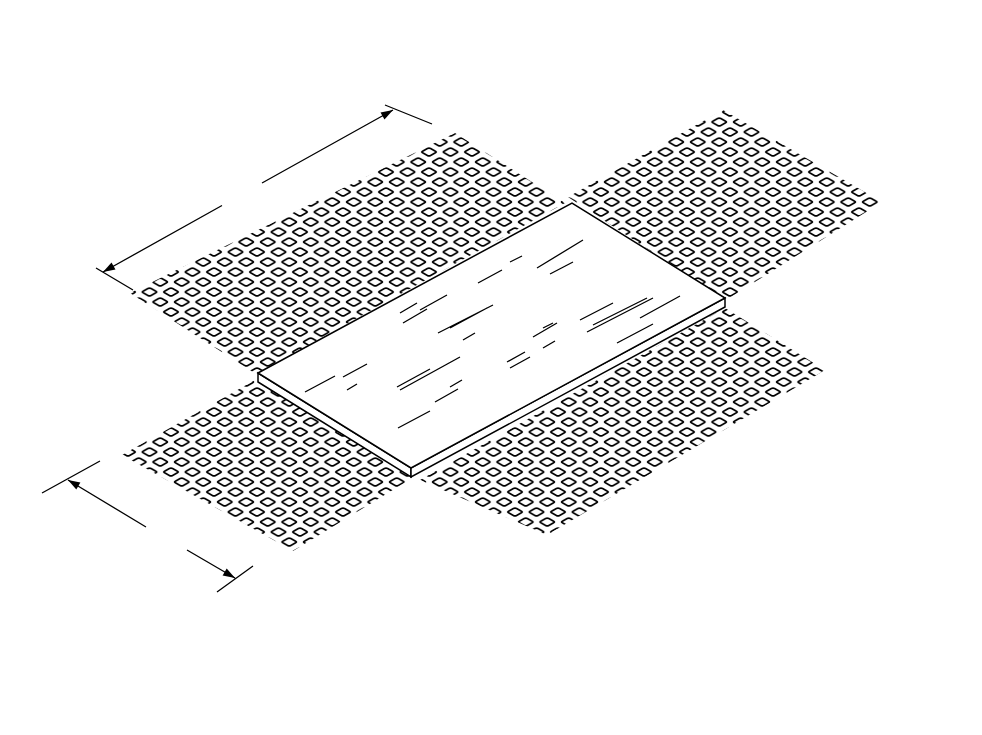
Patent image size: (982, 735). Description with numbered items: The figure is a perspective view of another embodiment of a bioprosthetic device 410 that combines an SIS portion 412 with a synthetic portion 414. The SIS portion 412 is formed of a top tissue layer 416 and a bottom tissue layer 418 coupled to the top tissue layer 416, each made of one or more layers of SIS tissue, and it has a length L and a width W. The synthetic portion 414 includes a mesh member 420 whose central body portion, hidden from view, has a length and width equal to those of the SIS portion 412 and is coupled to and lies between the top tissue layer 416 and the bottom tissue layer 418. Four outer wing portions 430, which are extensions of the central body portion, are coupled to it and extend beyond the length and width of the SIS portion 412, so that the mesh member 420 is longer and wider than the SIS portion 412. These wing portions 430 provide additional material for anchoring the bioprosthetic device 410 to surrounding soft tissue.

The bioprosthetic device 410 is at (700, 82).
The SIS portion 412 is at (547, 247).
The synthetic portion 414 is at (830, 143).
The top tissue layer 416 is at (613, 262).
The bottom tissue layer 418 is at (421, 480).
The mesh member 420 is at (172, 337).
The outer wing portions 430 is at (478, 166).